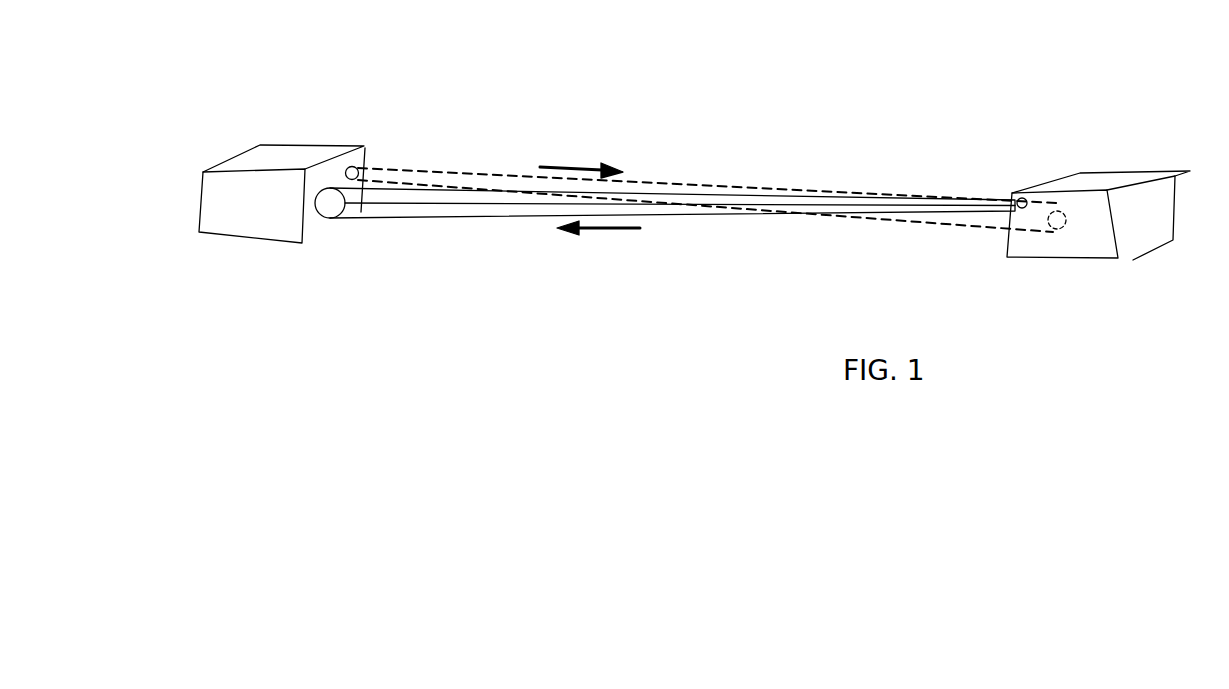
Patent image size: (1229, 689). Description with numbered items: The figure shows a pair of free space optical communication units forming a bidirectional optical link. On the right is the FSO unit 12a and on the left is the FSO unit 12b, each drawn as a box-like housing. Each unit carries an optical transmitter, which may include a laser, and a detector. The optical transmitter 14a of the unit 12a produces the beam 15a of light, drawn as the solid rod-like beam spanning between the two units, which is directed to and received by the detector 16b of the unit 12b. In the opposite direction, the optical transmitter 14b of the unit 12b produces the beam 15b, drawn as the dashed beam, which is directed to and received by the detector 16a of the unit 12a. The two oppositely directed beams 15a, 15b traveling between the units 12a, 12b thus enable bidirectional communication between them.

The FSO unit 12a is at (1083, 248).
The FSO unit 12b is at (240, 230).
The optical transmitter 14a is at (1027, 203).
The optical transmitter 14b is at (350, 167).
The beam 15a is at (427, 212).
The beam 15b is at (482, 178).
The detector 16a is at (1063, 208).
The detector 16b is at (328, 218).